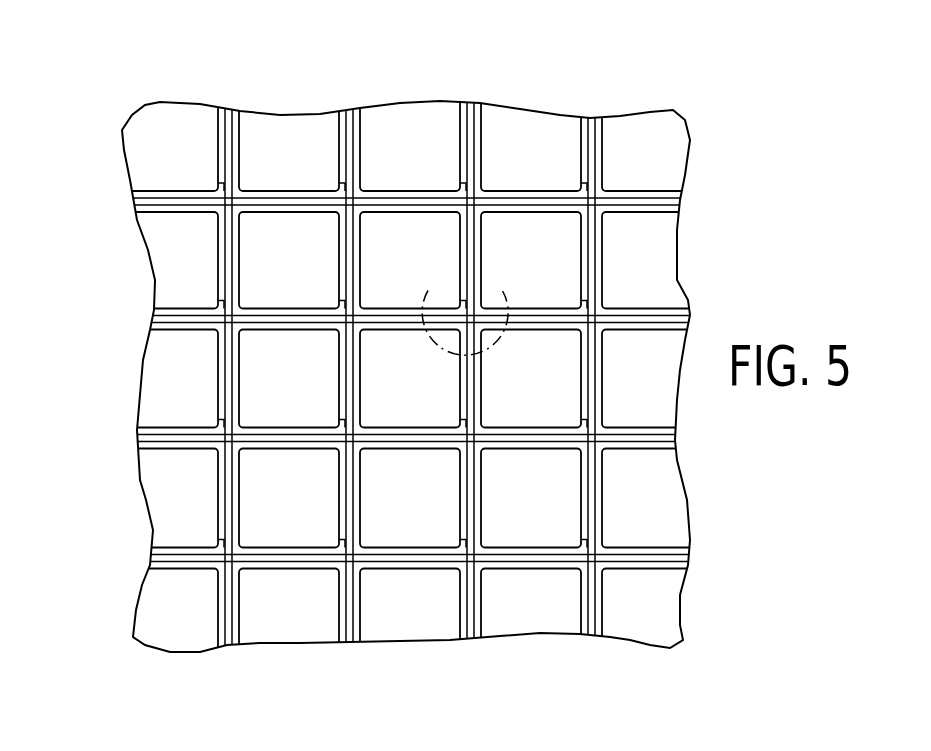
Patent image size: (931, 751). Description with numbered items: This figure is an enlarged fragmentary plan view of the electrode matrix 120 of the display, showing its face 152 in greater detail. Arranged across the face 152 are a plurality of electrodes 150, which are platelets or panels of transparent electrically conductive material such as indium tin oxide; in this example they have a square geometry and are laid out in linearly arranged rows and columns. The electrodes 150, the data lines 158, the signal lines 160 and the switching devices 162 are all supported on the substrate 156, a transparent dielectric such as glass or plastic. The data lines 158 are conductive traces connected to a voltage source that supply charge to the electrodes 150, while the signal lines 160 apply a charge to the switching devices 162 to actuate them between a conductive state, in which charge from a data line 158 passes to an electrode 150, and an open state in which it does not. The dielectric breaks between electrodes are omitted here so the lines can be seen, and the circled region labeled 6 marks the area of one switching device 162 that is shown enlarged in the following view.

The electrode matrix 120 is at (152, 96).
The face 152 is at (410, 380).
The electrodes 150 is at (410, 380).
The substrate 156 is at (413, 380).
The data lines 158 is at (406, 380).
The signal lines 160 is at (410, 380).
The switching devices 162 is at (402, 365).
The detail region of FIG. 6 is at (427, 290).